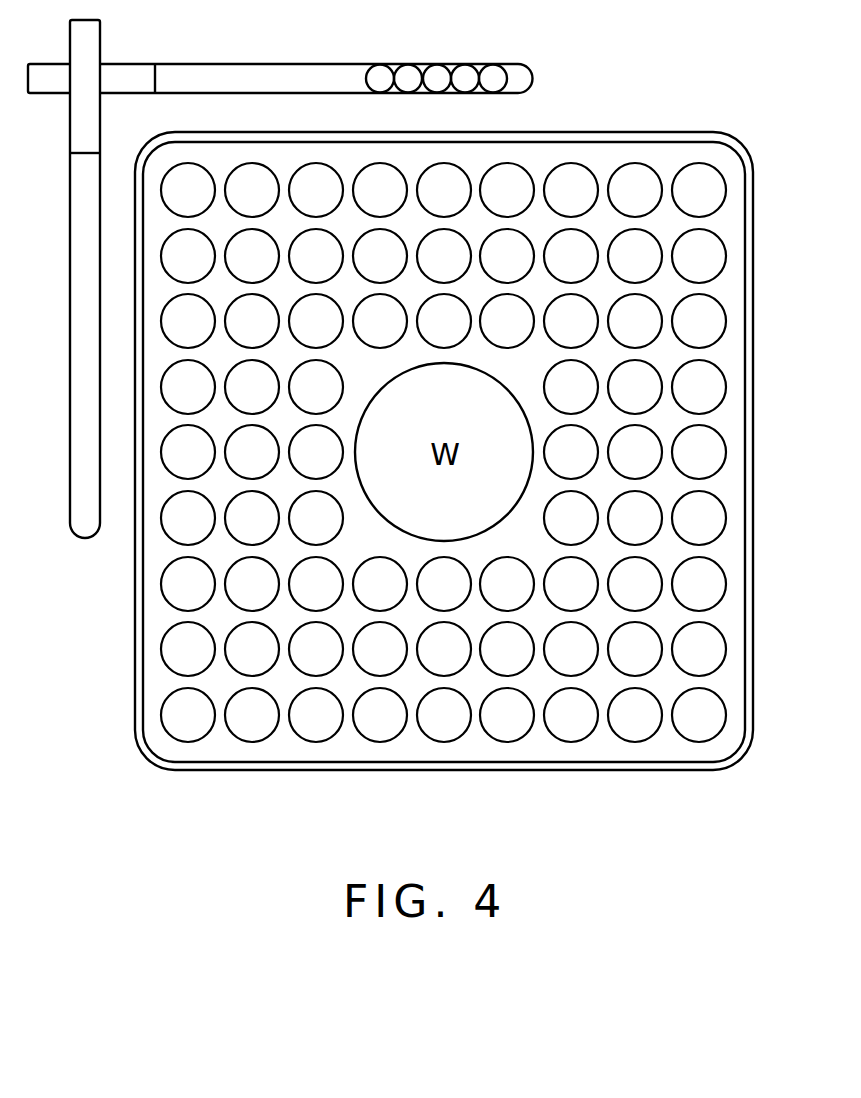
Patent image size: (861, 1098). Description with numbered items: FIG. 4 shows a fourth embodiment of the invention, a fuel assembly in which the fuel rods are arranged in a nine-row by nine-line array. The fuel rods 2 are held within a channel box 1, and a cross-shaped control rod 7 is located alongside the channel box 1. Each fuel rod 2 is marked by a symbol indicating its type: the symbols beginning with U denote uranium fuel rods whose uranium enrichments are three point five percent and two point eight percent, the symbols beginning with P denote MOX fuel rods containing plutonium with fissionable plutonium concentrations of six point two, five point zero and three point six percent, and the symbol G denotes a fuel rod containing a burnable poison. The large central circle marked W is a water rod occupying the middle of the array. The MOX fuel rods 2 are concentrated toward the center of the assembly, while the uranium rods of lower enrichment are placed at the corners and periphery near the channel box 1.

The channel box 1 is at (755, 190).
The fuel rod 2 is at (727, 390).
The control rod 7 is at (336, 65).